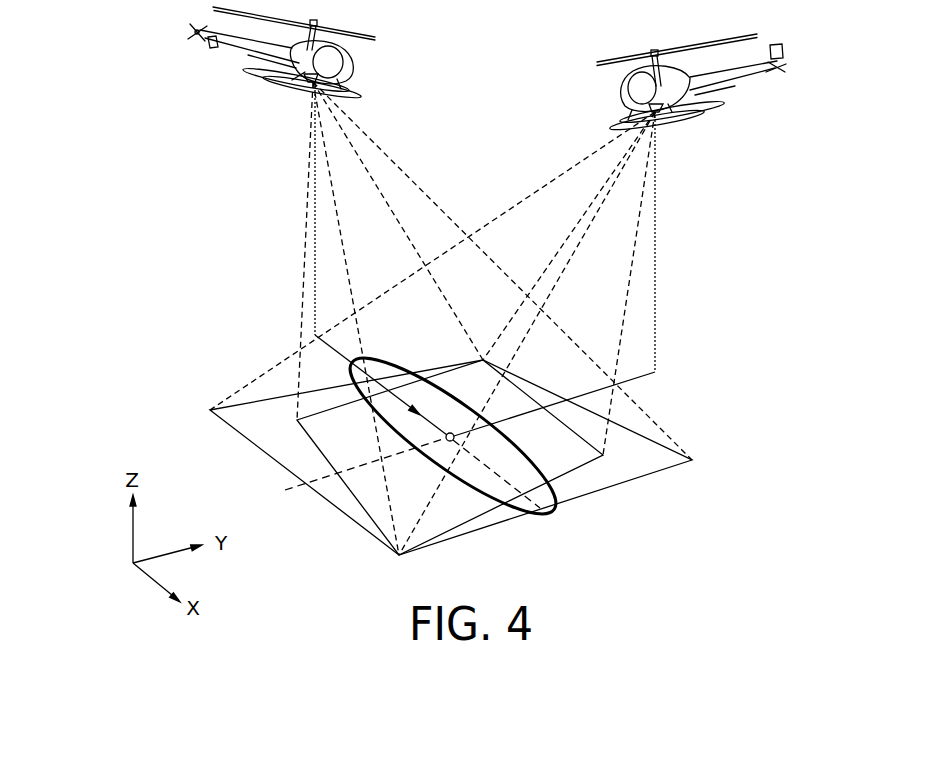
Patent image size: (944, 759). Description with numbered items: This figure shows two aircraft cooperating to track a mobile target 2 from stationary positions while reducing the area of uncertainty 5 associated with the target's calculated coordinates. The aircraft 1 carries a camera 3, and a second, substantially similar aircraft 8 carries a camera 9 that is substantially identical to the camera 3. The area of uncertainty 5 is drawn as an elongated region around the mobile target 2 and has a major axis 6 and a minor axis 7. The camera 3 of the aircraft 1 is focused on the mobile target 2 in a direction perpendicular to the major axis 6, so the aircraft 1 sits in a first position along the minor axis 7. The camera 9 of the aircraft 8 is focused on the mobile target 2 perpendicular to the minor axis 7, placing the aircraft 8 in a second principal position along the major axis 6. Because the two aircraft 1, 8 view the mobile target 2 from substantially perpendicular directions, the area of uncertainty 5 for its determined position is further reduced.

The aircraft 1 is at (623, 93).
The mobile target 2 is at (452, 432).
The camera 3 is at (659, 113).
The area of uncertainty 5 is at (530, 517).
The major axis 6 is at (557, 519).
The minor axis 7 is at (285, 491).
The aircraft 8 is at (347, 67).
The camera 9 is at (310, 84).